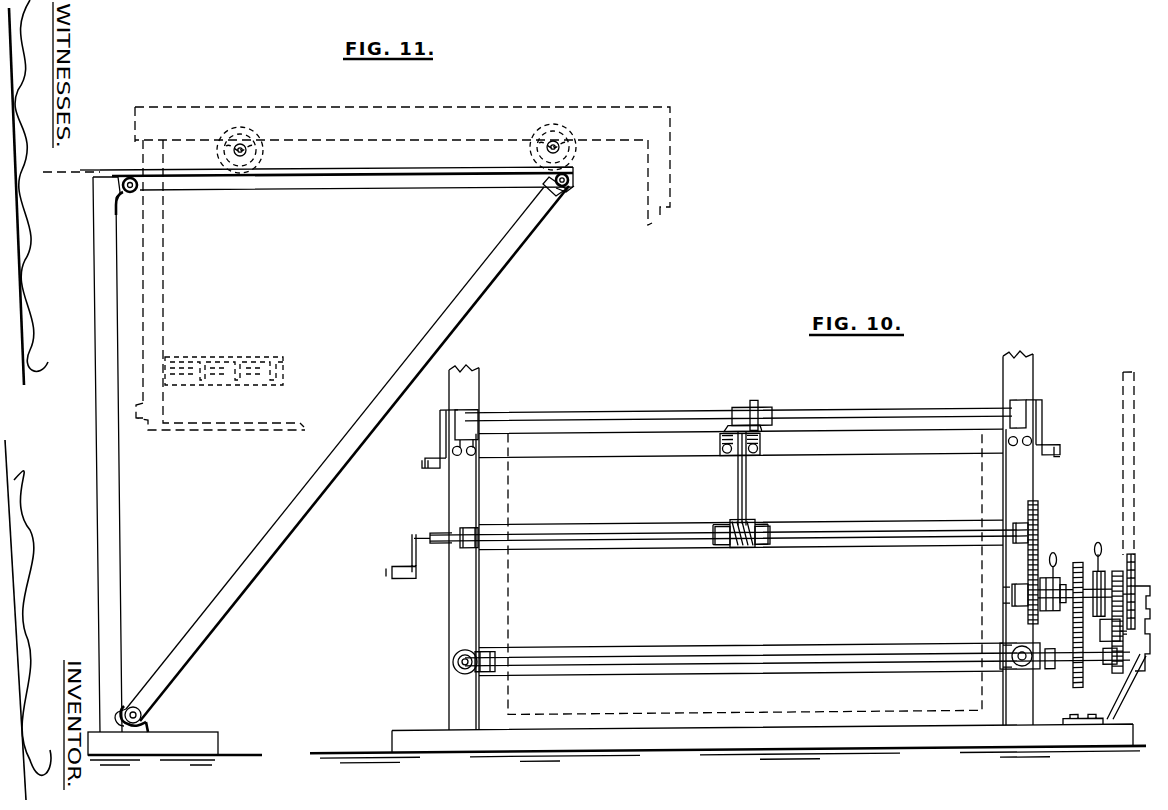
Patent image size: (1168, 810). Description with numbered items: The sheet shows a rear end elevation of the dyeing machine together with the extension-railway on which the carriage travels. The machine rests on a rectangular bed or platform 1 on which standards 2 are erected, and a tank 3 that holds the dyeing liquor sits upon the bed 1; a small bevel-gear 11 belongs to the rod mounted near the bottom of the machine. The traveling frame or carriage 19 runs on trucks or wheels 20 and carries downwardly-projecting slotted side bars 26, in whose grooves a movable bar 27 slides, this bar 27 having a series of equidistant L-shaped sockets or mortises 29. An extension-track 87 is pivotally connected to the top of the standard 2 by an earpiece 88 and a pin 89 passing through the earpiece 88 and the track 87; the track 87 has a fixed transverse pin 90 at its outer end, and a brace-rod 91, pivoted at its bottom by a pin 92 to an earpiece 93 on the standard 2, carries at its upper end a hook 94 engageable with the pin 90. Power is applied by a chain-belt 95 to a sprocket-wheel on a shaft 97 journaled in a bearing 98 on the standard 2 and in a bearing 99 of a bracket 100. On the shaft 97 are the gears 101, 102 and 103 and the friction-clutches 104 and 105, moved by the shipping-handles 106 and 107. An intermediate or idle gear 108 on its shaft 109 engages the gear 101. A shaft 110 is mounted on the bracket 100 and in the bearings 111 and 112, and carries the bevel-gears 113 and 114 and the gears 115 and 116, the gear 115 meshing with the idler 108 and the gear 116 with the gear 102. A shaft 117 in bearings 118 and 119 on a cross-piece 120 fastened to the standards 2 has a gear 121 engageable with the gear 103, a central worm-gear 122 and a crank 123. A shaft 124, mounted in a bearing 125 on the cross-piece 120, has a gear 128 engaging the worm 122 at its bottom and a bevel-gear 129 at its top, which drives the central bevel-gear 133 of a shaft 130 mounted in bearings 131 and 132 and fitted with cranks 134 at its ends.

In FIG. 11, the bed or platform 1 is at (228, 739).
In FIG. 10, the bed or platform 1 is at (392, 738).
In FIG. 11, the standards 2 is at (88, 451).
In FIG. 10, the standards 2 is at (452, 610).
In FIG. 10, the tank 3 is at (745, 587).
In FIG. 10, the bevel-gear 11 is at (449, 670).
In FIG. 11, the traveling frame or carriage 19 is at (402, 166).
In FIG. 11, the trucks or wheels 20 is at (396, 148).
In FIG. 11, the side bars 26 is at (386, 285).
In FIG. 11, the movable bar 27 is at (217, 388).
In FIG. 11, the L-shaped sockets or mortises 29 is at (248, 358).
In FIG. 11, the extension-track 87 is at (336, 190).
In FIG. 11, the earpiece 88 is at (124, 196).
In FIG. 11, the pin 89 is at (129, 178).
In FIG. 11, the transverse pin 90 is at (556, 186).
In FIG. 11, the brace-rod 91 is at (347, 453).
In FIG. 11, the pin 92 is at (134, 704).
In FIG. 11, the earpiece 93 is at (148, 719).
In FIG. 11, the hook 94 is at (566, 189).
In FIG. 10, the chain-belt 95 is at (1122, 474).
In FIG. 10, the shaft 97 is at (1135, 566).
In FIG. 10, the bearing 98 is at (1012, 598).
In FIG. 10, the bearing 99 is at (1142, 593).
In FIG. 10, the bracket 100 is at (1112, 689).
In FIG. 10, the gear 101 is at (1118, 570).
In FIG. 10, the gear 102 is at (1077, 565).
In FIG. 10, the gear 103 is at (1010, 574).
In FIG. 10, the friction-clutch 104 is at (1054, 609).
In FIG. 10, the friction-clutch 105 is at (1090, 603).
In FIG. 10, the shipping-handle 106 is at (1059, 557).
In FIG. 10, the shipping-handle 107 is at (1110, 575).
In FIG. 10, the intermediate or idle gear 108 is at (1120, 629).
In FIG. 10, the shaft 109 is at (1124, 641).
In FIG. 10, the shaft 110 is at (775, 652).
In FIG. 10, the bearing 111 is at (998, 670).
In FIG. 10, the bearing 112 is at (490, 676).
In FIG. 10, the bevel-gear 113 is at (1048, 676).
In FIG. 10, the bevel-gear 114 is at (477, 677).
In FIG. 10, the gear 115 is at (1110, 672).
In FIG. 10, the gear 116 is at (1078, 694).
In FIG. 10, the shaft 117 is at (848, 530).
In FIG. 10, the bearing 118 is at (1015, 533).
In FIG. 10, the bearing 119 is at (470, 533).
In FIG. 10, the cross-piece 120 is at (672, 552).
In FIG. 10, the gear 121 is at (1038, 506).
In FIG. 10, the worm-gear 122 is at (747, 552).
In FIG. 10, the crank 123 is at (417, 567).
In FIG. 10, the shaft 124 is at (748, 491).
In FIG. 10, the bearing 125 is at (761, 445).
In FIG. 10, the gear 128 is at (737, 524).
In FIG. 10, the bevel-gear 129 is at (722, 440).
In FIG. 10, the shaft 130 is at (738, 402).
In FIG. 10, the bearing 131 is at (1012, 414).
In FIG. 10, the bearing 132 is at (470, 418).
In FIG. 10, the bevel-gear 133 is at (752, 403).
In FIG. 10, the cranks 134 is at (740, 434).